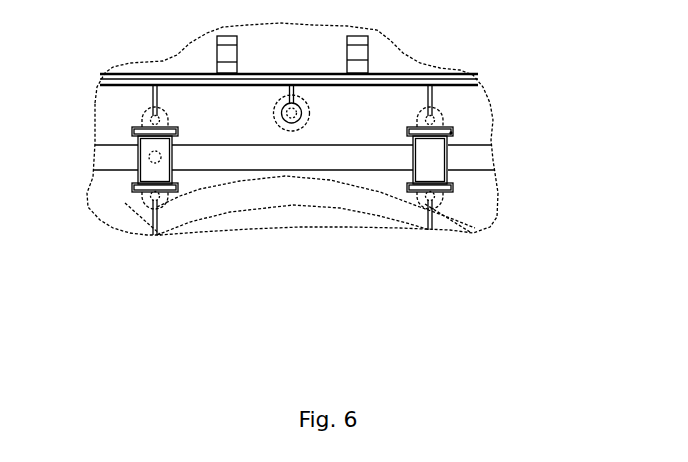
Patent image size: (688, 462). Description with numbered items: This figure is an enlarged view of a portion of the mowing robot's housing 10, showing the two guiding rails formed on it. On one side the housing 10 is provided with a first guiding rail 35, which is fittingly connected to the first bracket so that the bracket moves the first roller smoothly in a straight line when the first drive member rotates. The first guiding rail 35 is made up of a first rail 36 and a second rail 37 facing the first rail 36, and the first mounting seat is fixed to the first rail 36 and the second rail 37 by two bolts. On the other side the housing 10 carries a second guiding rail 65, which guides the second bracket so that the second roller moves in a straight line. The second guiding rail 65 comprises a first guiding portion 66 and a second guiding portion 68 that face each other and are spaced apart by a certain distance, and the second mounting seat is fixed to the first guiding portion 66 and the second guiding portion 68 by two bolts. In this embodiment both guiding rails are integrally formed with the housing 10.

The housing 10 is at (332, 117).
The first guiding rail 35 is at (192, 222).
The first rail 36 is at (176, 133).
The second rail 37 is at (137, 195).
The second guiding rail 65 is at (488, 232).
The first guiding portion 66 is at (452, 140).
The second guiding portion 68 is at (448, 133).